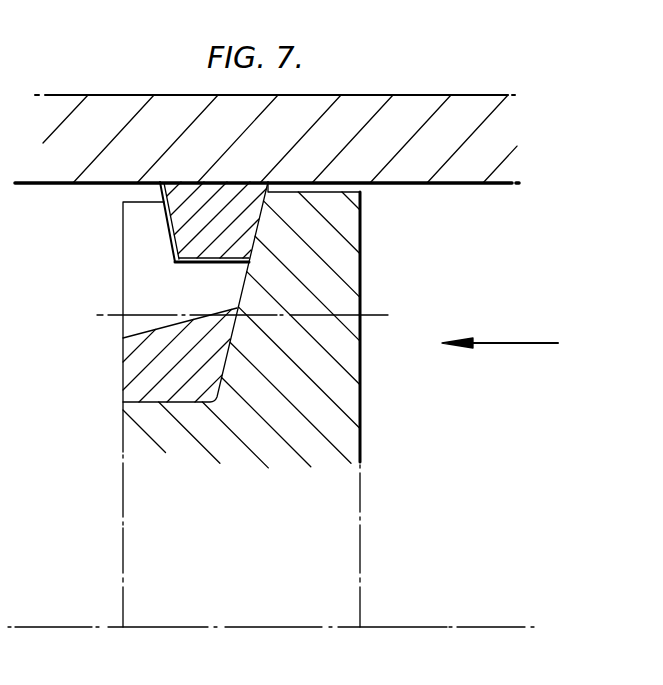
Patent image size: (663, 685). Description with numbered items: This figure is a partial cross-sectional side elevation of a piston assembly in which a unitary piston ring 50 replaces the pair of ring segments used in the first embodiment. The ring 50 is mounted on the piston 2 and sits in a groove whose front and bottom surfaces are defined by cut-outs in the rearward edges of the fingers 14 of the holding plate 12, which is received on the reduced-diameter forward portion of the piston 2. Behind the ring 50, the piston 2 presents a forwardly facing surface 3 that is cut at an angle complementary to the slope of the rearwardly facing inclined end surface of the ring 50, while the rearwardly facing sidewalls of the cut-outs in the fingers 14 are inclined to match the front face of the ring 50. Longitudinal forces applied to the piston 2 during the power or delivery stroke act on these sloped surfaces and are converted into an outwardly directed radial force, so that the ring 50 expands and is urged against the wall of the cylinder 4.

The piston 2 is at (285, 475).
The forwardly facing surface 3 is at (247, 287).
The cylinder 4 is at (422, 165).
The holding plate 12 is at (137, 368).
The fingers 14 is at (123, 268).
The piston ring 50 is at (182, 225).